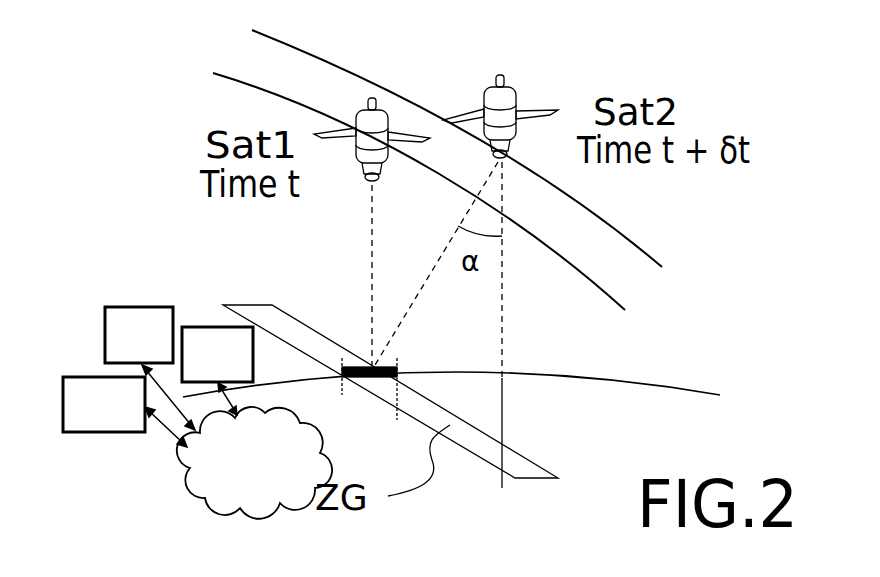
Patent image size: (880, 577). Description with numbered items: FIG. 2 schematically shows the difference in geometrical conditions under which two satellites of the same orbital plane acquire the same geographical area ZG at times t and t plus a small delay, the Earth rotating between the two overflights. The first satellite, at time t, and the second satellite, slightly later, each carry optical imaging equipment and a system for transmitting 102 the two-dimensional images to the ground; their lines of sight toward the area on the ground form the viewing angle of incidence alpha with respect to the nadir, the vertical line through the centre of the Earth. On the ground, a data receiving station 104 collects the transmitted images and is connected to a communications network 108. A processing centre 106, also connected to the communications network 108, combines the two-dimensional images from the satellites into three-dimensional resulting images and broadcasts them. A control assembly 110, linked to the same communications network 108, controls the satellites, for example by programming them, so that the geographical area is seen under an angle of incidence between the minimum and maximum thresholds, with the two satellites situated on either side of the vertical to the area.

The system for transmitting 102 is at (358, 163).
The data receiving station 104 is at (139, 335).
The processing centre 106 is at (217, 354).
The communications network 108 is at (254, 463).
The control assembly 110 is at (104, 404).